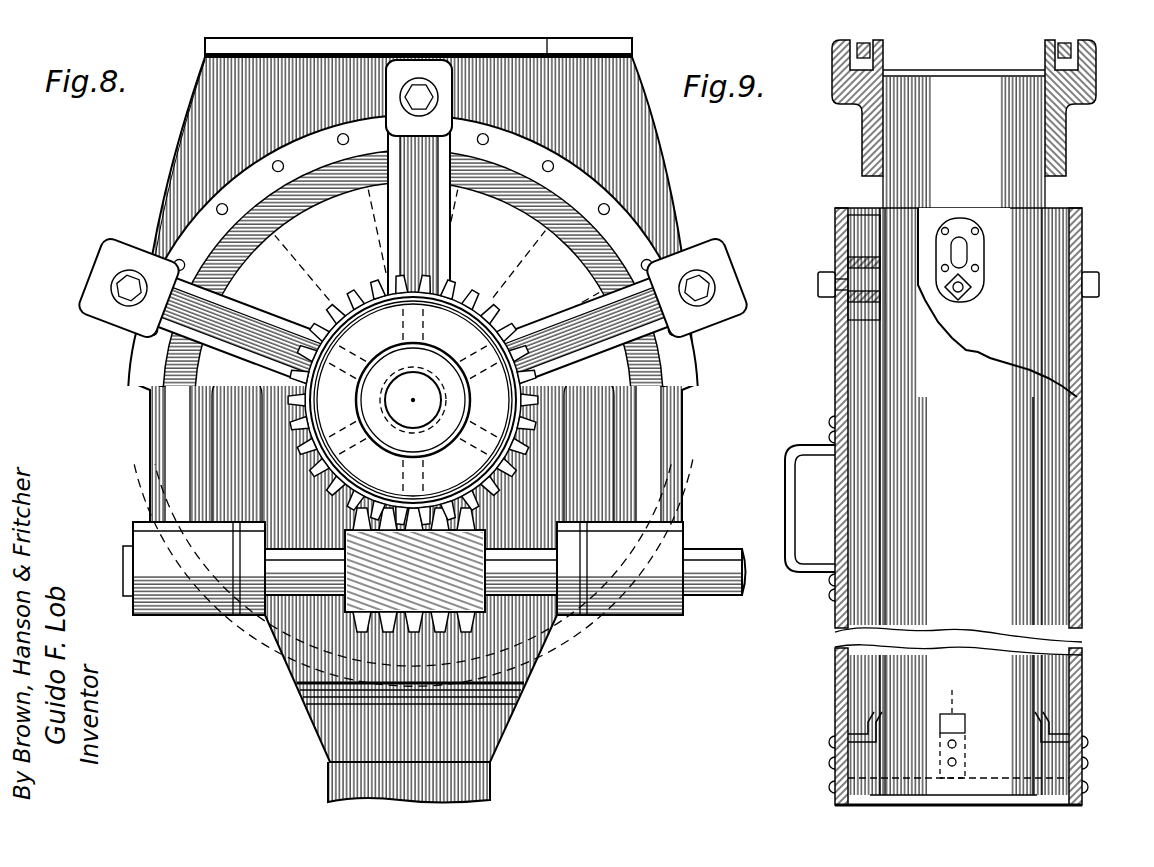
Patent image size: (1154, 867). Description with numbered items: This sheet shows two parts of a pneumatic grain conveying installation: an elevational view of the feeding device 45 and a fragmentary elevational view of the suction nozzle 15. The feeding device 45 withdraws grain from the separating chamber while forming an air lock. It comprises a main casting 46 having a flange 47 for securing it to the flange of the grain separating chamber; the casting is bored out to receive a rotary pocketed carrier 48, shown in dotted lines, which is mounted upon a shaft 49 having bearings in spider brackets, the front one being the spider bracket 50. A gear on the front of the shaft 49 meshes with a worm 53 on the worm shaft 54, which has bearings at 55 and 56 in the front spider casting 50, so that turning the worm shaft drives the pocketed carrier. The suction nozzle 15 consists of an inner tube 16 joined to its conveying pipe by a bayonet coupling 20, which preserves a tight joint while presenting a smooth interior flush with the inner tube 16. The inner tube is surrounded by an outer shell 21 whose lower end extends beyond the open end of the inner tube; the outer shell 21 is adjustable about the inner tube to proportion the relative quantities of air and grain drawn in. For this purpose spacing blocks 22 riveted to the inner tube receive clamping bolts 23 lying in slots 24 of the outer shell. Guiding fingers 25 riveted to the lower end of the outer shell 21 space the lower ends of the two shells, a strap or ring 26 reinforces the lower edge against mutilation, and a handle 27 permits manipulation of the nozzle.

In FIG. 8, the feeding device 45 is at (148, 152).
In FIG. 8, the main casting 46 is at (182, 192).
In FIG. 8, the flange 47 is at (257, 62).
In FIG. 8, the rotary pocketed carrier 48 is at (317, 230).
In FIG. 8, the shaft 49 is at (422, 412).
In FIG. 8, the front spider bracket 50 is at (573, 330).
In FIG. 8, the worm 53 is at (402, 504).
In FIG. 8, the worm shaft 54 is at (705, 585).
In FIG. 8, the bearing 55 is at (200, 596).
In FIG. 8, the bearing 56 is at (628, 618).
In FIG. 9, the suction nozzle 15 is at (815, 366).
In FIG. 9, the inner tube 16 is at (890, 405).
In FIG. 9, the bayonet coupling 20 is at (1082, 92).
In FIG. 9, the outer shell 21 is at (1082, 452).
In FIG. 9, the spacing blocks 22 is at (845, 310).
In FIG. 9, the clamping bolts 23 is at (818, 283).
In FIG. 9, the slots 24 is at (963, 250).
In FIG. 9, the guiding fingers 25 is at (1033, 725).
In FIG. 9, the strap or ring 26 is at (1073, 790).
In FIG. 9, the handle 27 is at (787, 505).